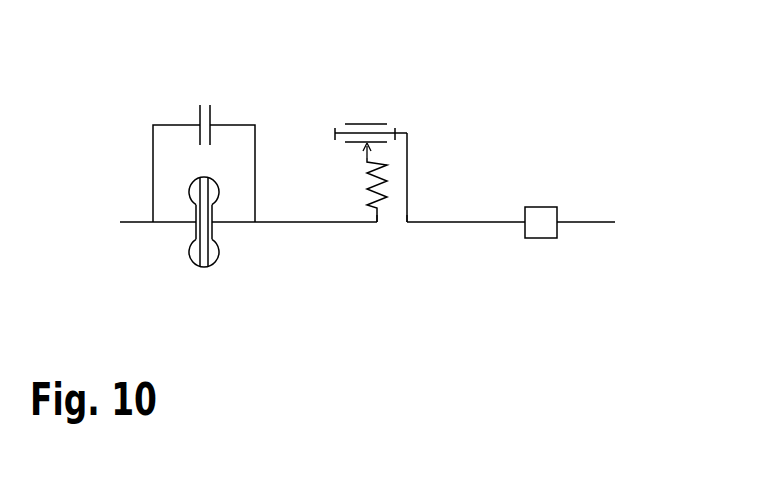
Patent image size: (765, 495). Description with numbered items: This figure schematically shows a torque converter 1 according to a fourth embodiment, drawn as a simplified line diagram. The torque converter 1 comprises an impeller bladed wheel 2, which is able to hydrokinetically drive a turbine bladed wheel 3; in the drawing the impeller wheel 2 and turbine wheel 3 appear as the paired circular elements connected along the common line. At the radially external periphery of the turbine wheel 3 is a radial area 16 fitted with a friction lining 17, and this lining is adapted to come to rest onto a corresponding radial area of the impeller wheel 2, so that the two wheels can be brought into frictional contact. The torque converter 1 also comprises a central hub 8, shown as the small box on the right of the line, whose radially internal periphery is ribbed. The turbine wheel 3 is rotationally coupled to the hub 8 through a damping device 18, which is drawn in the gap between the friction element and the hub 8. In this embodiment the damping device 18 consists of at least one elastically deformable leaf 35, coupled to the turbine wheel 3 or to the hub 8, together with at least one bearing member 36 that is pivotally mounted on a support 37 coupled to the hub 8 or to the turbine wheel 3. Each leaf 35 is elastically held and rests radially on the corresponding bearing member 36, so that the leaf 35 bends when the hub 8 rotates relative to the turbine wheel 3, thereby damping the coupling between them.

The torque converter 1 is at (514, 82).
The impeller bladed wheel 2 is at (191, 246).
The turbine bladed wheel 3 is at (220, 250).
The central hub 8 is at (538, 213).
The radial area 16 is at (213, 116).
The friction lining 17 is at (235, 114).
The damping device 18 is at (388, 238).
The elastically deformable leaf 35 is at (371, 178).
The bearing member 36 is at (366, 123).
The support 37 is at (408, 187).